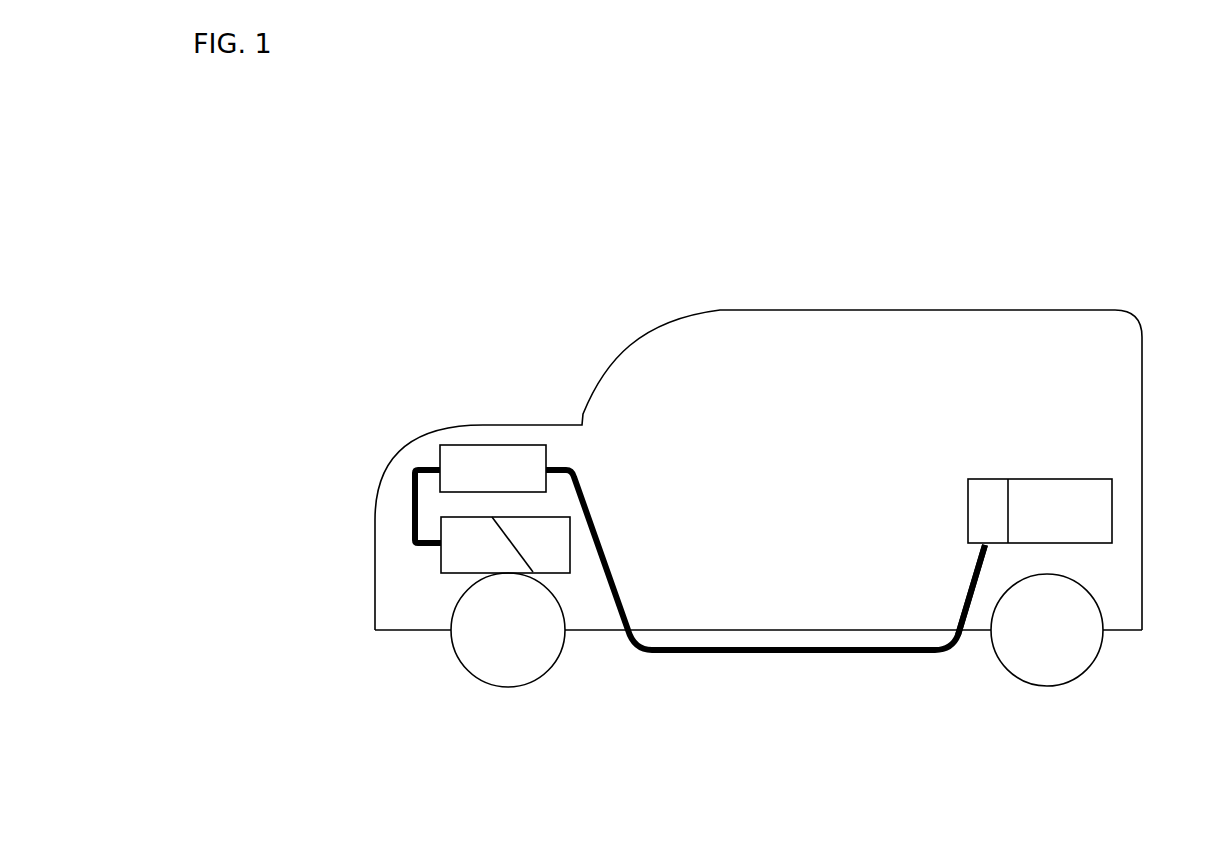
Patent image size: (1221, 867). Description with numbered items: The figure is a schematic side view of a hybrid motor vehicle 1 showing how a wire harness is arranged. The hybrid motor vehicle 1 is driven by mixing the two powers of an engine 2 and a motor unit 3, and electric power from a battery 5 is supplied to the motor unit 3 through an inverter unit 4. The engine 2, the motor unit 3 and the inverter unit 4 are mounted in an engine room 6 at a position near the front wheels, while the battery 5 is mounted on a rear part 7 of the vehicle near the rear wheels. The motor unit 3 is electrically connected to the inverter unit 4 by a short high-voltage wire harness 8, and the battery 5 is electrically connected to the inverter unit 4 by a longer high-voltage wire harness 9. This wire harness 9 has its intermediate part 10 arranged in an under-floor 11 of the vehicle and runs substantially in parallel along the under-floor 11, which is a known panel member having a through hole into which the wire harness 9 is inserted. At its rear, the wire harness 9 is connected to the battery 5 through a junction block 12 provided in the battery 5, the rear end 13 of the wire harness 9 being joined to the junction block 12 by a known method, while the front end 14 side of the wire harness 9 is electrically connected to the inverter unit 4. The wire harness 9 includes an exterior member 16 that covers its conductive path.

The hybrid motor vehicle 1 is at (508, 333).
The engine 2 is at (552, 552).
The motor unit 3 is at (453, 557).
The inverter unit 4 is at (465, 458).
The battery 5 is at (1065, 492).
The engine room 6 is at (395, 598).
The rear part 7 is at (1117, 570).
The wire harness 8 is at (408, 494).
The wire harness 9 is at (702, 656).
The intermediate part 10 is at (810, 657).
The under-floor 11 is at (897, 633).
The junction block 12 is at (978, 492).
The rear end 13 is at (975, 563).
The front end 14 is at (578, 467).
The exterior member 16 is at (563, 447).